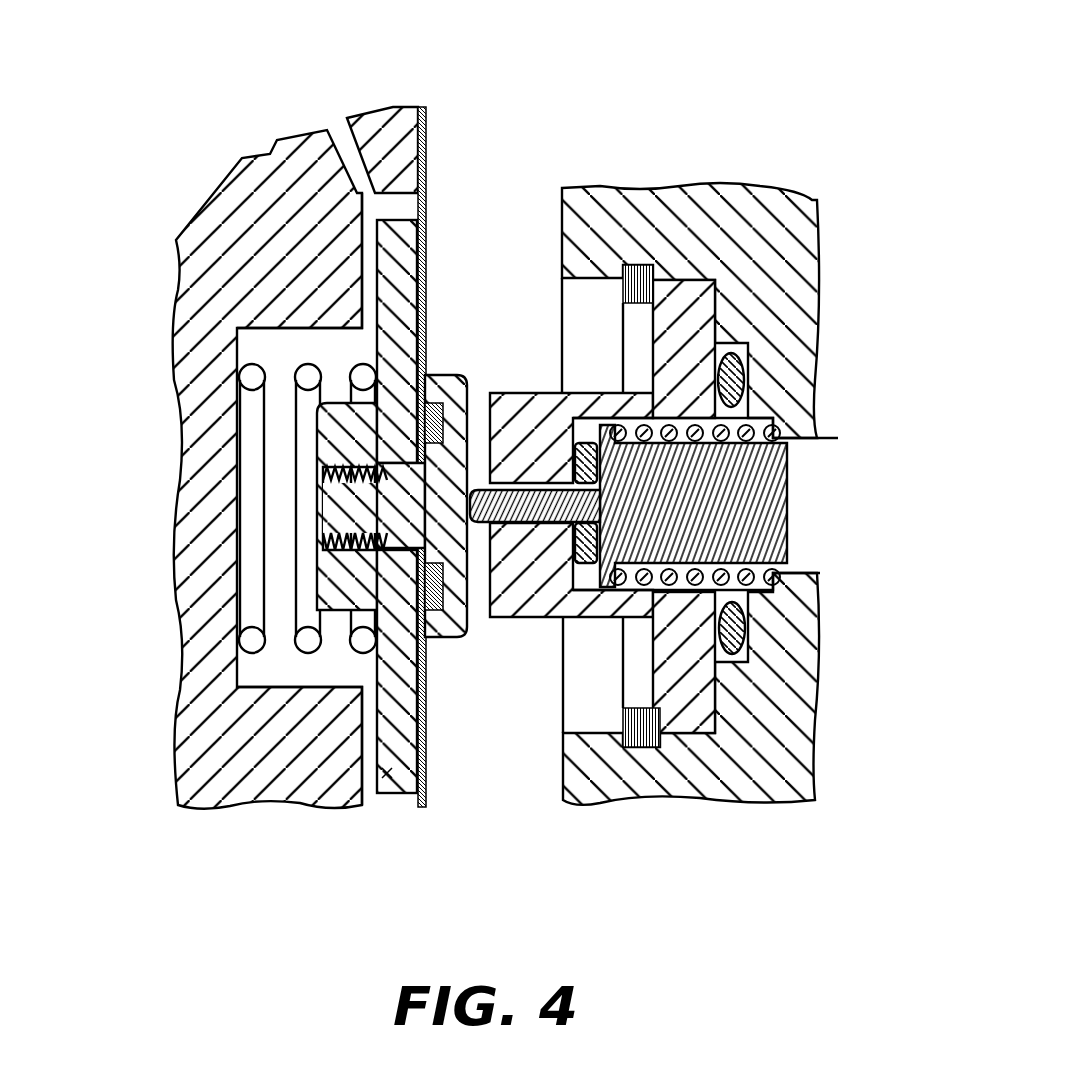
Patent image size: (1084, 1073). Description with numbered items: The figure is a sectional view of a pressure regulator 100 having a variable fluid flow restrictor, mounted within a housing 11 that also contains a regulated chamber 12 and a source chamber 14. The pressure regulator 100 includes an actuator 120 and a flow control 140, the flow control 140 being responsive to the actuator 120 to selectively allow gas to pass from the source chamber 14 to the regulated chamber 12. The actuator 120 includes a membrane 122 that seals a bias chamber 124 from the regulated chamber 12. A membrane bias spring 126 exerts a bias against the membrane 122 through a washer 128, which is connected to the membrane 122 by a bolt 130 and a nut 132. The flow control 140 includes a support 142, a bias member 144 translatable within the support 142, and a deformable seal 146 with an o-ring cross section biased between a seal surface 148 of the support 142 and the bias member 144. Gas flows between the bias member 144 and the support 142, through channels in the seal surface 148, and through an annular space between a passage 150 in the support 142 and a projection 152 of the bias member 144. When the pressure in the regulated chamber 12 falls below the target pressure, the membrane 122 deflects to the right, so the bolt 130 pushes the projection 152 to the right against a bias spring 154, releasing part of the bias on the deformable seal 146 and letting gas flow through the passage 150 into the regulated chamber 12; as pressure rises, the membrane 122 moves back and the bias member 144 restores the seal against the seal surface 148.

The pressure regulator 100 is at (856, 31).
The housing 11 is at (178, 280).
The regulated chamber 12 is at (505, 288).
The source chamber 14 is at (707, 496).
The actuator 120 is at (345, 340).
The membrane 122 is at (427, 107).
The bias chamber 124 is at (255, 668).
The membrane bias spring 126 is at (243, 408).
The washer 128 is at (387, 778).
The bolt 130 is at (340, 522).
The nut 132 is at (322, 435).
The flow control 140 is at (803, 454).
The support 142 is at (693, 348).
The bias member 144 is at (780, 533).
The deformable seal 146 is at (568, 440).
The seal surface 148 is at (600, 587).
The passage 150 is at (560, 525).
The projection 152 is at (510, 525).
The bias spring 154 is at (815, 662).